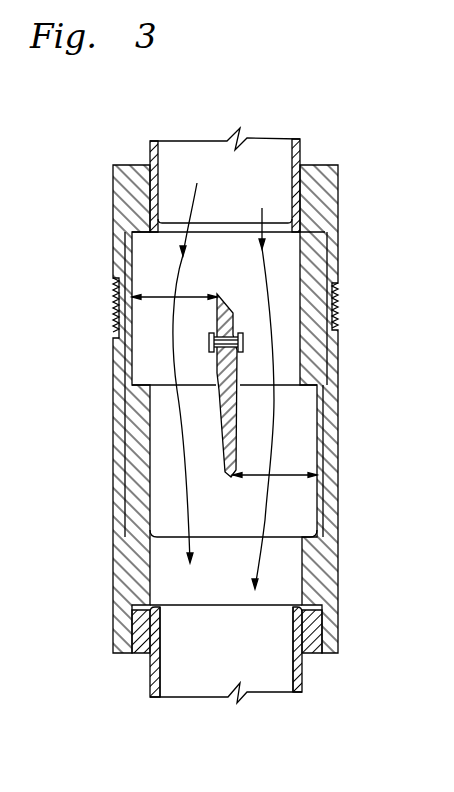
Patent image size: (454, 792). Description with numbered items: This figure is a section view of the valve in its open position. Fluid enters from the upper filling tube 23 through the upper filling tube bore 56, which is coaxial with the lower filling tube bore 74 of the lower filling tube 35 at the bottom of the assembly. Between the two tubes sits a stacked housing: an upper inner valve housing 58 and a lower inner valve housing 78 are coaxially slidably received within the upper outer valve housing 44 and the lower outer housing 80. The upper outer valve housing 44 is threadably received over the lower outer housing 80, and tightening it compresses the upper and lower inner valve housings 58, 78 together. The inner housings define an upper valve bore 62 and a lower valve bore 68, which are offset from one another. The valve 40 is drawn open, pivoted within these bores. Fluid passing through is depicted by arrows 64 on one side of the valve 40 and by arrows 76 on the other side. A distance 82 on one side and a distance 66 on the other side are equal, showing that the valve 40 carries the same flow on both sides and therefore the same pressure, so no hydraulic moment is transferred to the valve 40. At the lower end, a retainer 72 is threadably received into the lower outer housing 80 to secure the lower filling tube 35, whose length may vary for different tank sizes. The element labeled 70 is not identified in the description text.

The upper filling tube 23 is at (302, 150).
The lower filling tube 35 is at (150, 683).
The valve 40 is at (213, 383).
The upper outer valve housing 44 is at (113, 167).
The upper filling tube bore 56 is at (293, 158).
The upper inner valve housing 58 is at (326, 255).
The upper valve bore 62 is at (301, 330).
The arrows 64 is at (278, 425).
The distance 66 is at (290, 473).
The lower valve bore 68 is at (320, 498).
The retainer insert 70 is at (303, 572).
The retainer 72 is at (310, 655).
The lower filling tube bore 74 is at (290, 678).
The arrows 76 is at (187, 485).
The lower inner valve housing 78 is at (123, 465).
The lower outer housing 80 is at (113, 596).
The distance 82 is at (160, 297).